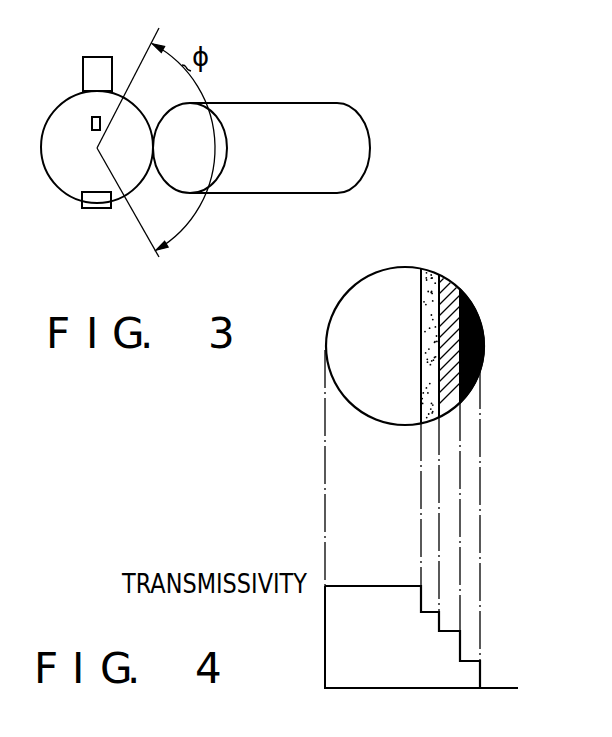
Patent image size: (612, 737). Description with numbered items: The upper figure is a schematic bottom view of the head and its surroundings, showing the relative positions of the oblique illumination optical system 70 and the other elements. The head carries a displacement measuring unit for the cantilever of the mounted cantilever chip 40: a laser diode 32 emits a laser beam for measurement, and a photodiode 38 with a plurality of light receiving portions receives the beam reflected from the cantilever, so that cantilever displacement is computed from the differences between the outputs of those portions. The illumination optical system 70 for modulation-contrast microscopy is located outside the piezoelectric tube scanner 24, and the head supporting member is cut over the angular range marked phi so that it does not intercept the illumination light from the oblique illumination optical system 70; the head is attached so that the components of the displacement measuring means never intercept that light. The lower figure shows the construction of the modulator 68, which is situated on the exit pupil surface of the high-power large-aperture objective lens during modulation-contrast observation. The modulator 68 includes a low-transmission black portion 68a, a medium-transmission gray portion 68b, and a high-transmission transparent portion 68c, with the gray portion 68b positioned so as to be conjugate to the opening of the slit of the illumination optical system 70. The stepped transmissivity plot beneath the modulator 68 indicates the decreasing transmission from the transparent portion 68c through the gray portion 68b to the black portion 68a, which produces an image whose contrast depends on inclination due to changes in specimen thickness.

In FIG. 3, the piezoelectric tube scanner 24 is at (69, 96).
In FIG. 3, the laser diode 32 is at (95, 55).
In FIG. 3, the photodiode 38 is at (98, 210).
In FIG. 3, the cantilever chip 40 is at (96, 132).
In FIG. 3, the illumination optical system 70 is at (301, 102).
In FIG. 4, the modulator 68 is at (374, 274).
In FIG. 4, the low-transmission black portion 68a is at (482, 320).
In FIG. 4, the medium-transmission gray portion 68b is at (454, 286).
In FIG. 4, the high-transmission transparent portion 68c is at (431, 275).